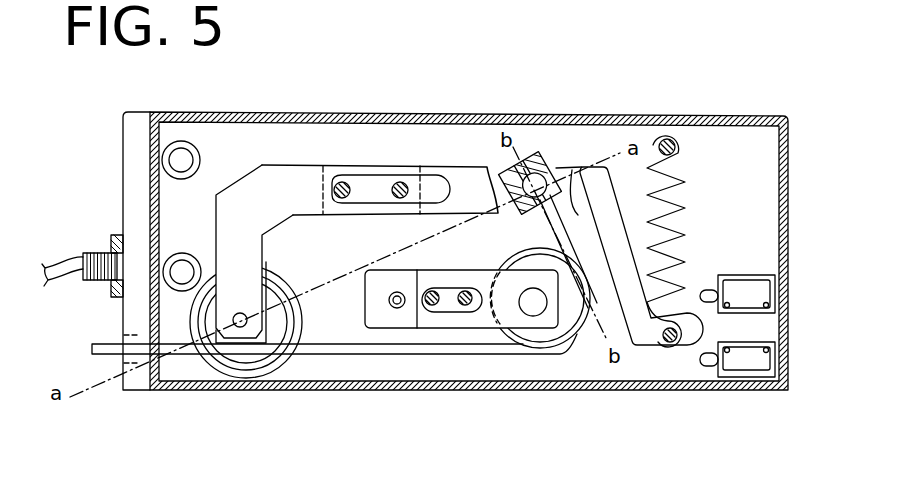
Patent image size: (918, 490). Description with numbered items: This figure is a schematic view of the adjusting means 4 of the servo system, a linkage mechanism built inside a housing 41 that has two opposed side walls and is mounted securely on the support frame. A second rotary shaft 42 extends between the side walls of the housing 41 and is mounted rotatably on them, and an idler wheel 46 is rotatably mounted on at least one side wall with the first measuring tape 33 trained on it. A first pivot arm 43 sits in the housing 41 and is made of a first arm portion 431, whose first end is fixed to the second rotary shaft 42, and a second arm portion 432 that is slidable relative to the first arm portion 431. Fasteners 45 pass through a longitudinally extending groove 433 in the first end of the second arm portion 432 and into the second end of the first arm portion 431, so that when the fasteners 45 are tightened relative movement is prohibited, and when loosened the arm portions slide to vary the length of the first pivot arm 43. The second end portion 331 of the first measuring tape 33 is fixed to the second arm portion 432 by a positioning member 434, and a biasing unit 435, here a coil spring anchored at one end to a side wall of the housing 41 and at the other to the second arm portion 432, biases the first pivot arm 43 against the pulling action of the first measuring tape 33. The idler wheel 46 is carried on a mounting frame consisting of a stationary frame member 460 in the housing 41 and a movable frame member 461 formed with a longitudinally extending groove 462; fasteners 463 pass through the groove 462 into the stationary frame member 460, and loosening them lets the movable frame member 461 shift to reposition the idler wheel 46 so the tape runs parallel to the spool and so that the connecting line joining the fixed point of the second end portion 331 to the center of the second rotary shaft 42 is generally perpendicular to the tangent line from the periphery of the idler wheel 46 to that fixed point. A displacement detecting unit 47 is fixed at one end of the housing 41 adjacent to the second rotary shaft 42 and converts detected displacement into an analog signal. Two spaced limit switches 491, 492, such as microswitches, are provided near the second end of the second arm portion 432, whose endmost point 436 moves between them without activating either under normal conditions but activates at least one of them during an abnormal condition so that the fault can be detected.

The adjusting means 4 is at (681, 110).
The first measuring tape 33 is at (178, 355).
The housing 41 is at (790, 183).
The second rotary shaft 42 is at (216, 322).
The first pivot arm 43 is at (368, 202).
The fasteners 45 is at (342, 182).
The idler wheel 46 is at (523, 344).
The displacement detecting unit 47 is at (96, 253).
The second end portion of the first measuring tape 331 is at (580, 162).
The first arm portion 431 is at (230, 183).
The second arm portion 432 is at (462, 166).
The longitudinally extending groove 433 is at (373, 186).
The positioning member 434 is at (534, 150).
The biasing unit 435 is at (685, 221).
The endmost point 436 is at (688, 343).
The stationary frame member 460 is at (378, 322).
The movable frame member 461 is at (418, 318).
The longitudinally extending groove 462 is at (448, 312).
The fasteners 463 is at (432, 306).
The limit switch 491 is at (755, 375).
The limit switch 492 is at (760, 292).